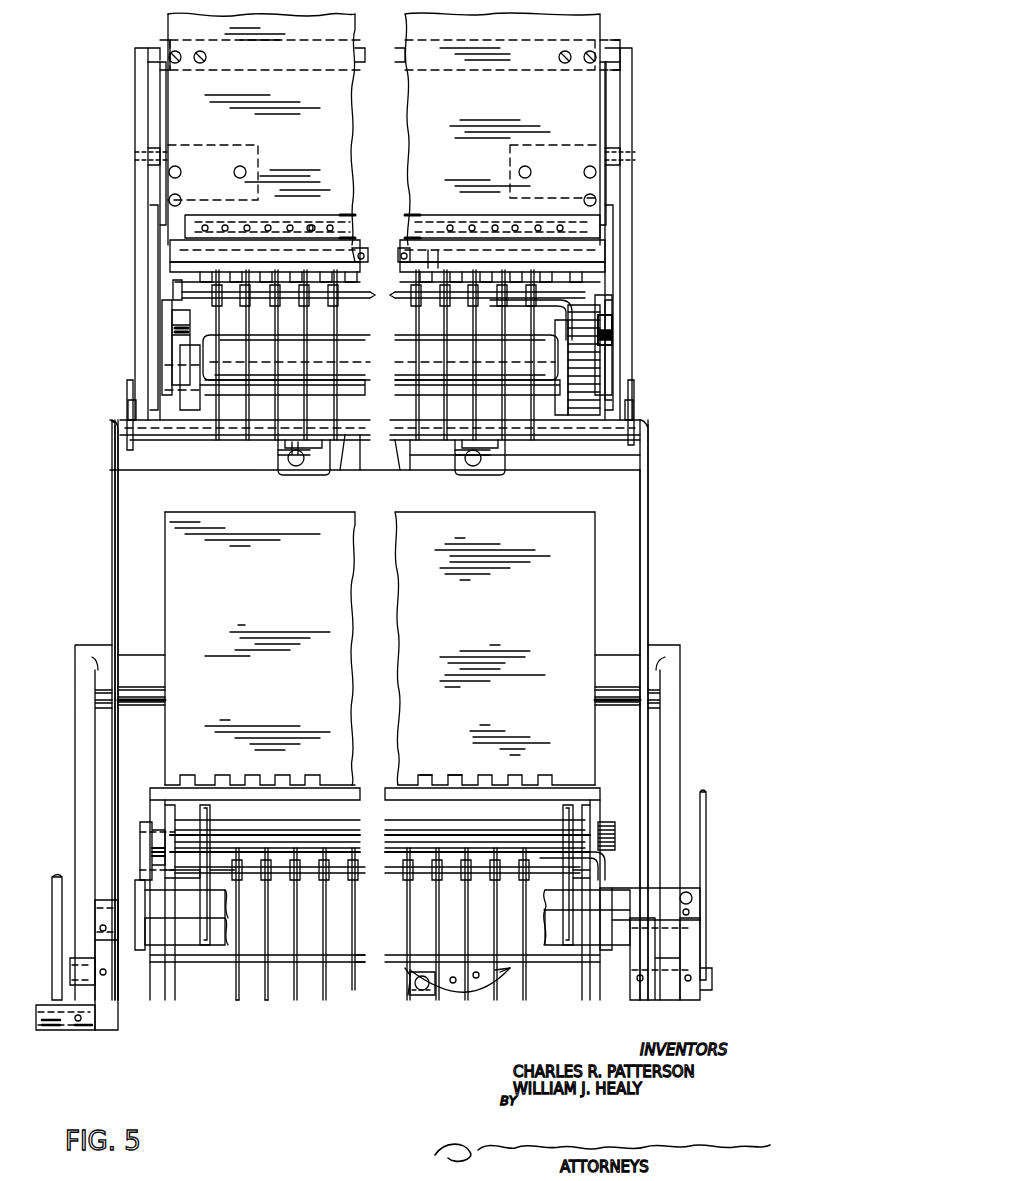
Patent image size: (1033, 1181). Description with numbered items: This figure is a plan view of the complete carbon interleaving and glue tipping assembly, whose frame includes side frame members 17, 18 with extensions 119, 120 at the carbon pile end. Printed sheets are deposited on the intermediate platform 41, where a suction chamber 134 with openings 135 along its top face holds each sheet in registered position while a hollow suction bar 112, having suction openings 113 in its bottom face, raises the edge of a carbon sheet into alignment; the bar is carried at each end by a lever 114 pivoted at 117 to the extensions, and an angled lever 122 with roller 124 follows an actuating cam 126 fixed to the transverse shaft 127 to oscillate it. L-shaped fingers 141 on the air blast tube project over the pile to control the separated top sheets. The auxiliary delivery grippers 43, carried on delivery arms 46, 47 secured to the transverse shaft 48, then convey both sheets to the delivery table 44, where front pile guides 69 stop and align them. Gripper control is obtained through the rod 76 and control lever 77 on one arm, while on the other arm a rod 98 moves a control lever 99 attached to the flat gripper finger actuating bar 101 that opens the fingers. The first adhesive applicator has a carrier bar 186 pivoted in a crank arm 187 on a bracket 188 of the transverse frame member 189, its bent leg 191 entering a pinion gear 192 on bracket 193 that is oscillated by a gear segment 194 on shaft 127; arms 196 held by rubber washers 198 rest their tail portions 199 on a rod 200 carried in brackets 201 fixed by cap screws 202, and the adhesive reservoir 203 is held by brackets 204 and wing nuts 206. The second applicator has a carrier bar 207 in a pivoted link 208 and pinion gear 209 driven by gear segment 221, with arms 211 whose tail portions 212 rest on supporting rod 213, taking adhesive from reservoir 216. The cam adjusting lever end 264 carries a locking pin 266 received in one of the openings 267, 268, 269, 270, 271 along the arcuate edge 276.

The side frame member 17 is at (112, 573).
The side frame member 18 is at (643, 582).
The intermediate platform 41 is at (580, 108).
The auxiliary delivery grippers 43 is at (568, 805).
The delivery table 44 is at (570, 570).
The delivery arm 46 is at (80, 783).
The delivery arm 47 is at (668, 763).
The transverse shaft 48 is at (140, 668).
The front pile guides 69 is at (455, 775).
The rod 76 is at (55, 923).
The delivery gripper control lever 77 is at (103, 1000).
The rod 98 is at (706, 815).
The control lever 99 is at (688, 940).
The gripper finger actuating bar 101 is at (715, 885).
The suction bar 112 is at (575, 246).
The suction openings 113 is at (368, 258).
The lever 114 is at (660, 186).
The pivot 117 is at (660, 155).
The side frame extension 119 is at (138, 305).
The side frame extension 120 is at (628, 270).
The angled lever 122 is at (660, 247).
The roller 124 is at (660, 316).
The actuating cam 126 is at (660, 352).
The transverse shaft 127 is at (420, 385).
The suction chamber 134 is at (190, 228).
The openings 135 is at (312, 225).
The L-shaped fingers 141 is at (428, 250).
The carrier bar 186 is at (350, 300).
The crank arm 187 is at (175, 292).
The bracket 188 is at (185, 360).
The transverse frame member 189 is at (345, 465).
The leg 191 is at (578, 302).
The pinion gear 192 is at (590, 338).
The bracket 193 is at (560, 408).
The gear segment 194 is at (592, 388).
The arms 196 is at (218, 400).
The rubber washers 198 is at (255, 298).
The tail portion 199 is at (210, 432).
The rod 200 is at (520, 445).
The bracket 201 is at (660, 410).
The cap screws 202 is at (660, 392).
The adhesive reservoir 203 is at (352, 368).
The brackets 204 is at (318, 443).
The wing nuts 206 is at (450, 478).
The carrier bar 207 is at (355, 875).
The pivoted link 208 is at (147, 850).
The pinion gear 209 is at (608, 822).
The arms 211 is at (288, 920).
The tail portions 212 is at (240, 990).
The supporting rod 213 is at (572, 990).
The reservoir 216 is at (290, 827).
The gear segment 221 is at (612, 875).
The lever end 264 is at (425, 998).
The locking pin 266 is at (420, 985).
The opening 267 is at (505, 975).
The opening 268 is at (478, 980).
The opening 269 is at (456, 985).
The opening 270 is at (440, 980).
The opening 271 is at (410, 975).
The arcuate edge 276 is at (510, 972).